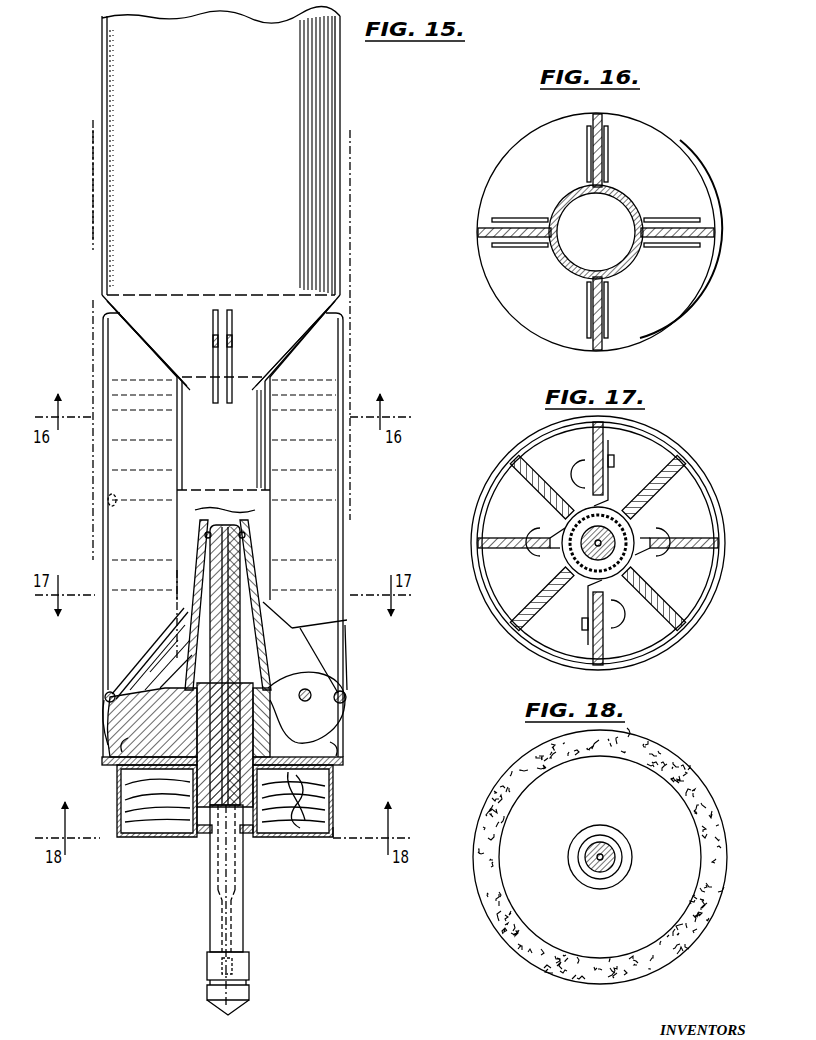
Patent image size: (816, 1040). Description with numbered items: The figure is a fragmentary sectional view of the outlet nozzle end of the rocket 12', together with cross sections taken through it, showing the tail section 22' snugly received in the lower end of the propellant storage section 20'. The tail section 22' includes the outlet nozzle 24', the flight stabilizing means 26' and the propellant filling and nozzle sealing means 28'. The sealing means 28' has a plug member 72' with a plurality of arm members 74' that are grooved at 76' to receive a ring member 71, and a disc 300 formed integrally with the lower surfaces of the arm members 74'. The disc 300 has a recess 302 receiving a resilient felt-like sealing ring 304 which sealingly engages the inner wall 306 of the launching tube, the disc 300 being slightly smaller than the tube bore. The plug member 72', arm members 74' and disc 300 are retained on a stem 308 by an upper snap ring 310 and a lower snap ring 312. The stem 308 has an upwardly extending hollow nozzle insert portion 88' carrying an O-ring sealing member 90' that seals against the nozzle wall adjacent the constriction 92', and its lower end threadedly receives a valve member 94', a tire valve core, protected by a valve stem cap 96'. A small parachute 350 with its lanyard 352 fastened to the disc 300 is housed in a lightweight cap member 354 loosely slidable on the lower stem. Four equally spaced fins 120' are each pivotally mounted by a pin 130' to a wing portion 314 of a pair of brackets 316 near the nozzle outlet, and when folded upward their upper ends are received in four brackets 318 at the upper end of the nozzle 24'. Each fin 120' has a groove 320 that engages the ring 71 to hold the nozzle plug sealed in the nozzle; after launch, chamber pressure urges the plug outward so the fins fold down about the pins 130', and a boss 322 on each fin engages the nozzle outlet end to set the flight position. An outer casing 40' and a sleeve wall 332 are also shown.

In FIG. 15, the rocket 12' is at (197, 149).
In FIG. 15, the propellant storage section 20' is at (208, 177).
In FIG. 15, the outer casing 40' is at (66, 185).
In FIG. 15, the tail section 22' is at (187, 429).
In FIG. 15, the brackets 318 is at (213, 337).
In FIG. 16, the brackets 318 is at (532, 220).
In FIG. 15, the fins 120' is at (226, 535).
In FIG. 16, the fins 120' is at (617, 231).
In FIG. 17, the fins 120' is at (604, 528).
In FIG. 15, the flight stabilizing means 26' is at (401, 461).
In FIG. 15, the inner wall 306 is at (108, 500).
In FIG. 15, the outlet nozzle 24' is at (208, 599).
In FIG. 15, the constriction 92' is at (218, 629).
In FIG. 15, the O-ring sealing member 90' is at (259, 665).
In FIG. 15, the ring member 71 is at (110, 700).
In FIG. 17, the ring member 71 is at (487, 488).
In FIG. 15, the grooves 76' is at (90, 690).
In FIG. 15, the arm members 74' is at (151, 653).
In FIG. 17, the arm members 74' is at (597, 538).
In FIG. 15, the stem 308 is at (200, 795).
In FIG. 18, the stem 308 is at (610, 842).
In FIG. 15, the wing portion 314 is at (264, 680).
In FIG. 17, the wing portion 314 is at (612, 490).
In FIG. 15, the nozzle insert portion 88' is at (318, 647).
In FIG. 15, the pivot pins 130' is at (330, 707).
In FIG. 17, the pivot pins 130' is at (625, 540).
In FIG. 15, the upper snap ring 310 is at (311, 684).
In FIG. 15, the groove 320 is at (346, 698).
In FIG. 15, the propellant filling and nozzle sealing means 28' is at (416, 716).
In FIG. 15, the boss 322 is at (126, 742).
In FIG. 15, the recess 302 is at (346, 760).
In FIG. 15, the disc 300 is at (333, 785).
In FIG. 18, the disc 300 is at (530, 905).
In FIG. 15, the plug member 72' is at (225, 769).
In FIG. 15, the lanyard 352 is at (333, 800).
In FIG. 15, the parachute 350 is at (298, 812).
In FIG. 15, the cap member 354 is at (334, 830).
In FIG. 15, the lower snap ring 312 is at (255, 830).
In FIG. 15, the sleeve wall 332 is at (198, 833).
In FIG. 15, the valve member 94' is at (257, 878).
In FIG. 15, the valve stem cap 96' is at (250, 983).
In FIG. 17, the brackets 316 is at (585, 512).
In FIG. 18, the resilient sealing ring 304 is at (500, 797).